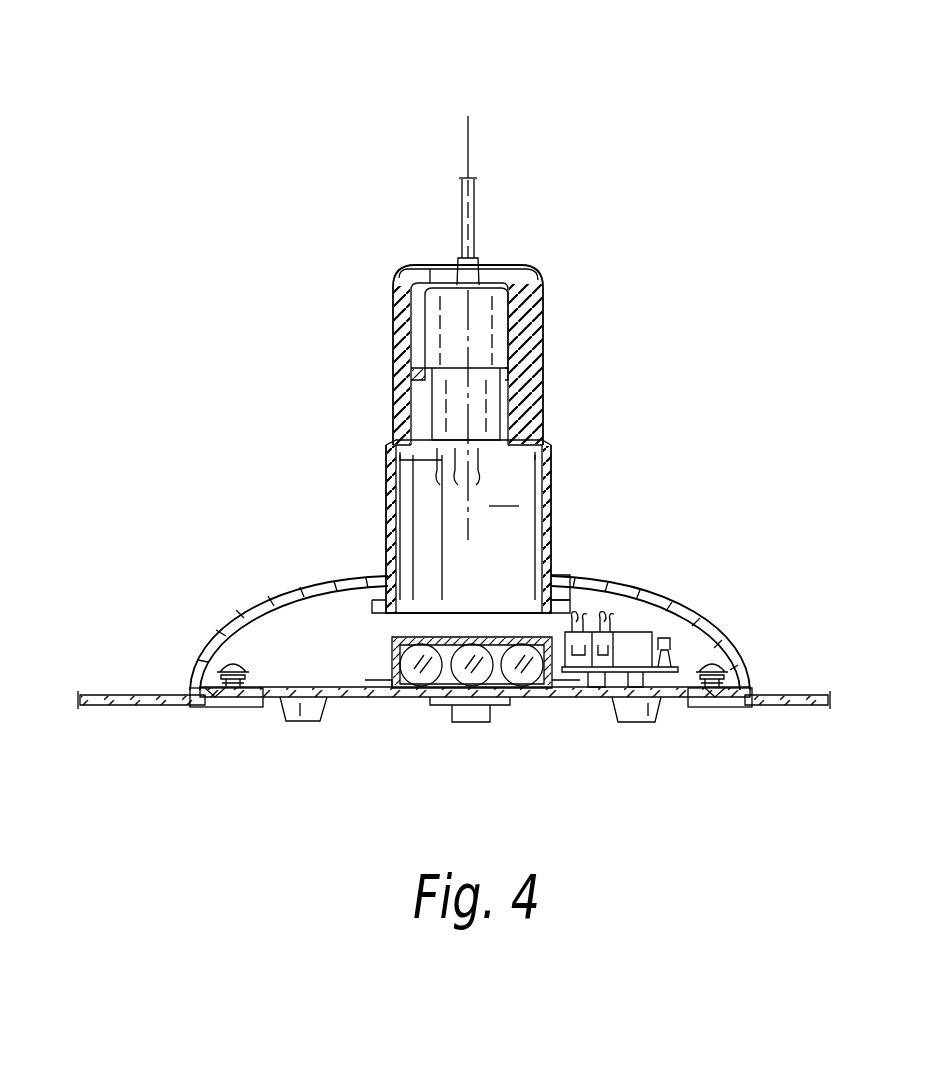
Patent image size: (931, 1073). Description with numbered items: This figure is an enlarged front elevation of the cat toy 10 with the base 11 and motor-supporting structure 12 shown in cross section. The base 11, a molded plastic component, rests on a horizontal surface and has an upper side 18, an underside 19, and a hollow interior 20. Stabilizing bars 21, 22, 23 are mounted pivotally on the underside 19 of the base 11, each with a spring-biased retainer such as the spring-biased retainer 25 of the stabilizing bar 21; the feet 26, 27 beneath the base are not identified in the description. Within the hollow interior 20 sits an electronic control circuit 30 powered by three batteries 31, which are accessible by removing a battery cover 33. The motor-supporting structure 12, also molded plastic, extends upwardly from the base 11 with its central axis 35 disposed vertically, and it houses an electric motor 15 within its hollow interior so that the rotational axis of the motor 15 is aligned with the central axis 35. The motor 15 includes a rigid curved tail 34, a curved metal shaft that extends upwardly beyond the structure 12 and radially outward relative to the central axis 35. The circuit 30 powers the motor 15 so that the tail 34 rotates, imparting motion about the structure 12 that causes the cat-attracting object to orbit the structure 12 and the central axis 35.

The cat toy 10 is at (270, 100).
The base 11 is at (613, 580).
The motor-supporting structure 12 is at (528, 258).
The electric motor 15 is at (442, 298).
The upper side 18 is at (705, 606).
The underside 19 is at (700, 703).
The hollow interior 20 is at (356, 662).
The stabilizing bar 21 is at (120, 694).
The stabilizing bar 22 is at (458, 722).
The stabilizing bar 23 is at (810, 694).
The spring-biased retainer 25 is at (228, 666).
The foot 26 is at (292, 722).
The foot 27 is at (630, 722).
The electronic control circuit 30 is at (624, 665).
The batteries 31 is at (523, 686).
The battery cover 33 is at (398, 692).
The curved tail 34 is at (462, 200).
The central axis 35 is at (470, 142).